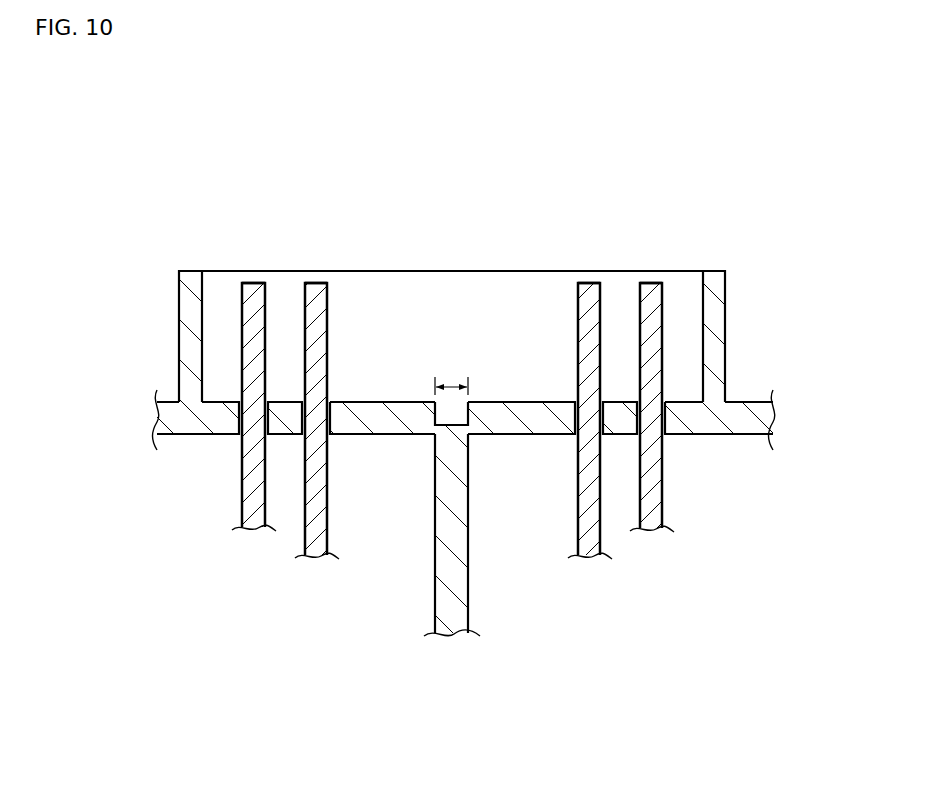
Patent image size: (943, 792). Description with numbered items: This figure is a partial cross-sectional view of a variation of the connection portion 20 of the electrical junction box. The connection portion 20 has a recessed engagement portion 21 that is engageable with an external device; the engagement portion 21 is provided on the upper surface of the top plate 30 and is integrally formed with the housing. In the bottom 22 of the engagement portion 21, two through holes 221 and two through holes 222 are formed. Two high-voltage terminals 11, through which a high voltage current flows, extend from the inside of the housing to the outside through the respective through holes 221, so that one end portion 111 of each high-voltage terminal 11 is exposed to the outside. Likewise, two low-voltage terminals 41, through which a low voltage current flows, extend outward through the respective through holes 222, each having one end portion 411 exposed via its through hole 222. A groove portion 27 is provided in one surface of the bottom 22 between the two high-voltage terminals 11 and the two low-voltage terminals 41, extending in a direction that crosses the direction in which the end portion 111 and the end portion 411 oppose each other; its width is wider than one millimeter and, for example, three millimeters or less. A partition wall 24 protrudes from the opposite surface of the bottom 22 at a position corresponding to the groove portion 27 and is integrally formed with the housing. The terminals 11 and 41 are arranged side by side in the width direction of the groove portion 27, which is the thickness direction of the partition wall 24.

The connection portion 20 is at (484, 396).
The engagement portion 21 is at (715, 290).
The bottom 22 is at (218, 398).
The top plate 30 is at (747, 408).
The groove portion 27 is at (458, 414).
The partition wall 24 is at (447, 634).
The through hole 221 is at (333, 390).
The through hole 222 is at (571, 392).
The high-voltage terminal 11 is at (250, 531).
The end portion 111 is at (253, 291).
The low-voltage terminal 41 is at (585, 559).
The end portion 411 is at (590, 291).